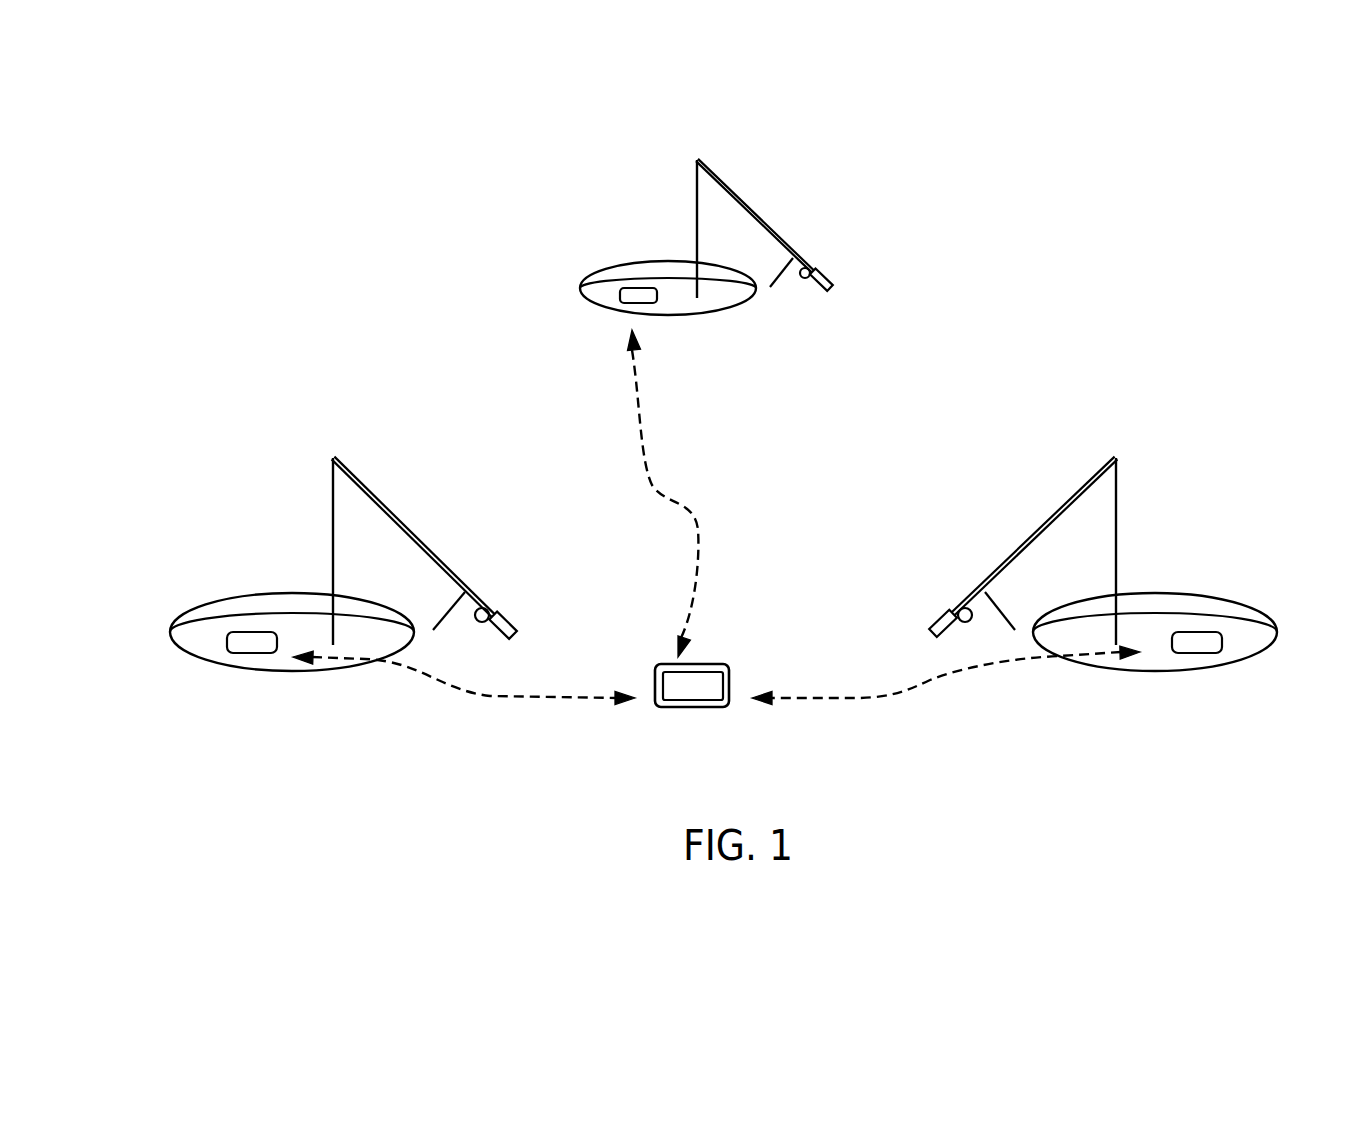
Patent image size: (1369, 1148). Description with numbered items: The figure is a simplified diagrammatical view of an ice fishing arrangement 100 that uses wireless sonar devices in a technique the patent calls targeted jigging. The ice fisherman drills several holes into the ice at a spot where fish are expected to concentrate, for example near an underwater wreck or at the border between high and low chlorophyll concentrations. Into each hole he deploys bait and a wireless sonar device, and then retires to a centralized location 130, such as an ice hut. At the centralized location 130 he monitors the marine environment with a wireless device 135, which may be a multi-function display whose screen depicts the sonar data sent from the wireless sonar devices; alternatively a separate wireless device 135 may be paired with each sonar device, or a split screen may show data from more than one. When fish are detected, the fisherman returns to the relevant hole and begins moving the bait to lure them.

The fishing system 100 is at (272, 173).
The centralized location 130 is at (731, 724).
The wireless device 135 is at (685, 707).